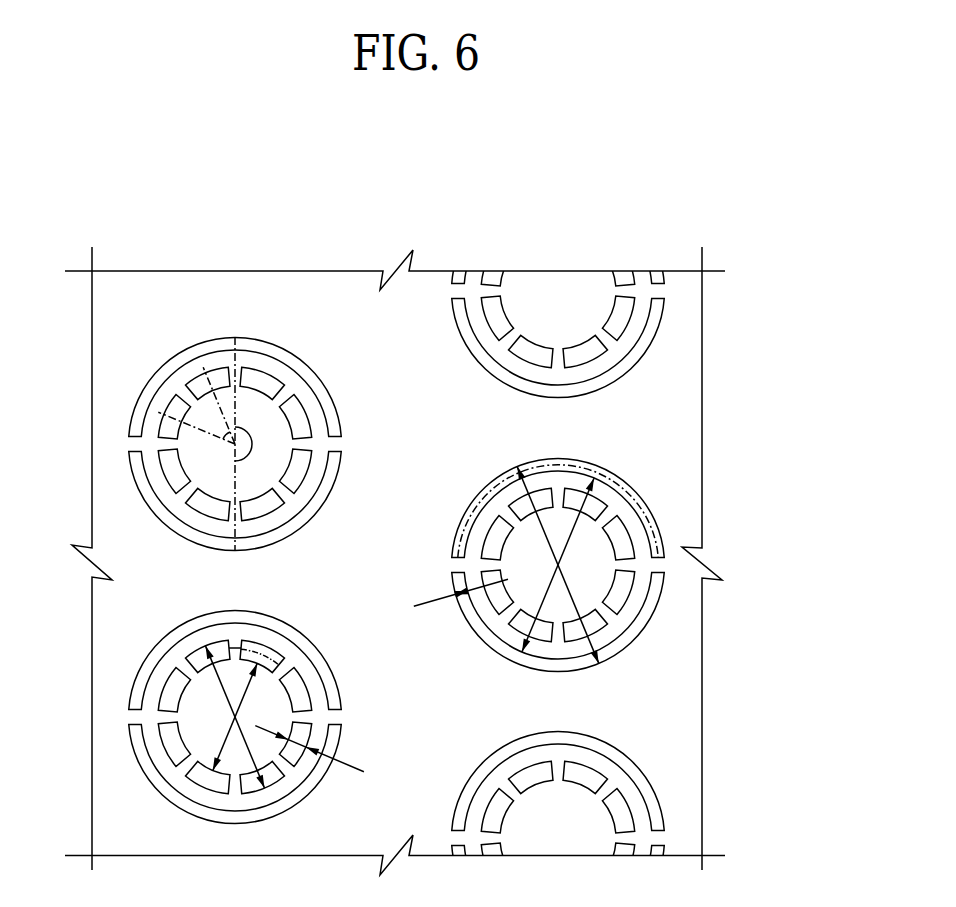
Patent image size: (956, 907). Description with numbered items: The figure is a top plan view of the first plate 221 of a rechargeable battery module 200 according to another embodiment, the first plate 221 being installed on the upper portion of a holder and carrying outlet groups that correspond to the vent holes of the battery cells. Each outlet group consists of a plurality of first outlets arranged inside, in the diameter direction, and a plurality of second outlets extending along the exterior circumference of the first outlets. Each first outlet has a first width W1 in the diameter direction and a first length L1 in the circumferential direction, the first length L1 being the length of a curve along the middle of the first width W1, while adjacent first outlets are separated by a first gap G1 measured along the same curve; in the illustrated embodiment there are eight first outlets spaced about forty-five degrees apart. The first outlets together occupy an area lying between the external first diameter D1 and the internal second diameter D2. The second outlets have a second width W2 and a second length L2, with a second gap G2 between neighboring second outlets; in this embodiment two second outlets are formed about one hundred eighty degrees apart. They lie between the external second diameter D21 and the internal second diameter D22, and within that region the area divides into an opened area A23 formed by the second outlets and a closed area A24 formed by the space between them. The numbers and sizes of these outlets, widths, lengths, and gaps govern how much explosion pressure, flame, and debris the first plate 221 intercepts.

The rechargeable battery module 200 is at (341, 216).
The first plate 221 is at (685, 393).
The opened area A23 is at (642, 499).
The second closed area A24 is at (662, 566).
The first gap G1 is at (233, 647).
The first length L1 is at (263, 653).
The first width W1 is at (314, 749).
The first diameter D1 is at (235, 758).
The second diameter D2 is at (200, 748).
The second length L2 is at (570, 462).
The second gap G2 is at (456, 565).
The second width W2 is at (460, 603).
The external second diameter D21 is at (562, 598).
The internal second diameter D22 is at (566, 598).